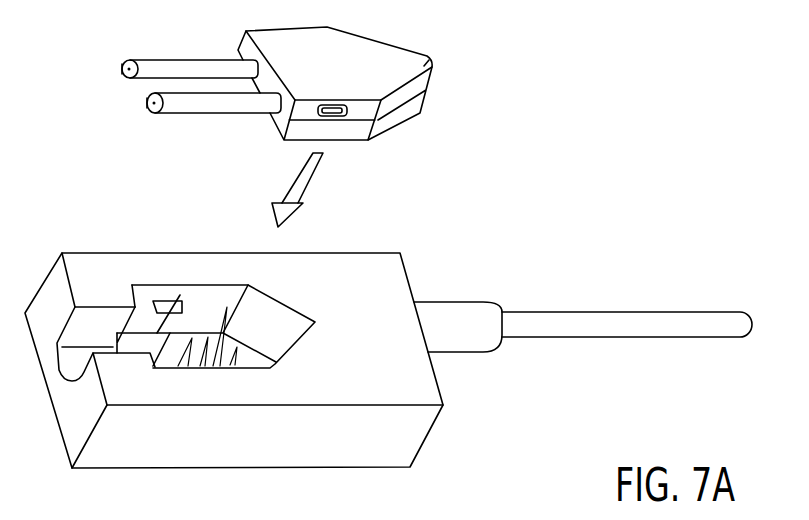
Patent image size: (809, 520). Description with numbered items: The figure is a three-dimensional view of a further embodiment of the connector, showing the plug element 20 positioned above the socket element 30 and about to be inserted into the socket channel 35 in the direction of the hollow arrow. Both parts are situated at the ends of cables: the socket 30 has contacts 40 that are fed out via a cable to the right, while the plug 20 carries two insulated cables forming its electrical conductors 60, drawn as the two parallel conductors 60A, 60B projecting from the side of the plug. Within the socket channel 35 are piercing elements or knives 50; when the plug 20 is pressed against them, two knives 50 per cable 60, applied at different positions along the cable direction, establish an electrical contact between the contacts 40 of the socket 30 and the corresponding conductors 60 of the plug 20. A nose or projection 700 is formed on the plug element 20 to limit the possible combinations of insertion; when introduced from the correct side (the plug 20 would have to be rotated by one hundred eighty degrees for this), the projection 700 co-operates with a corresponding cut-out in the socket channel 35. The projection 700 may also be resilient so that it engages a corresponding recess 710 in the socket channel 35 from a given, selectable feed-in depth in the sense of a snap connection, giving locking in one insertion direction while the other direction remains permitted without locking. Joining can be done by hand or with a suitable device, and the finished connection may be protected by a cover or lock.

The plug element 20 is at (430, 61).
The socket element 30 is at (408, 450).
The socket channel 35 is at (247, 331).
The contacts 40 is at (603, 330).
The piercing elements 50 is at (210, 345).
The electrical conductors 60 is at (147, 105).
The first lead 60A is at (220, 107).
The second lead 60B is at (168, 63).
The projection 700 is at (323, 119).
The recess 710 is at (175, 300).